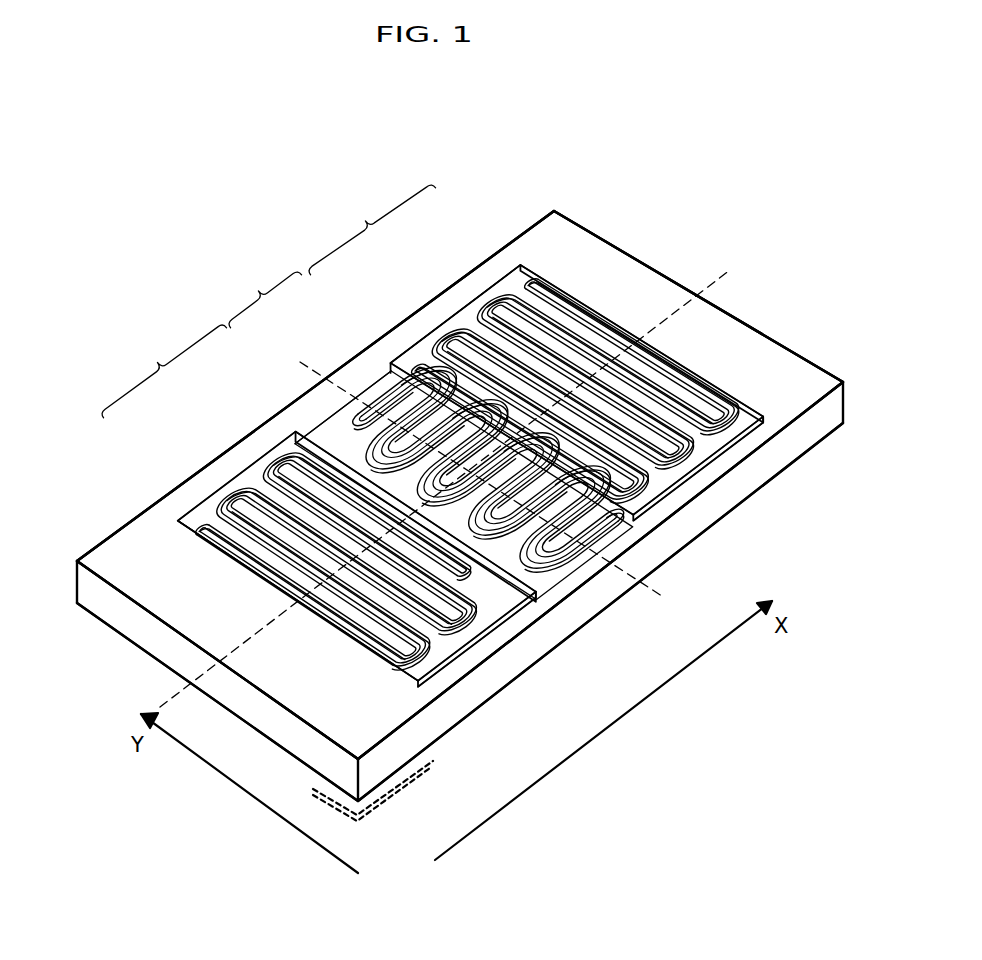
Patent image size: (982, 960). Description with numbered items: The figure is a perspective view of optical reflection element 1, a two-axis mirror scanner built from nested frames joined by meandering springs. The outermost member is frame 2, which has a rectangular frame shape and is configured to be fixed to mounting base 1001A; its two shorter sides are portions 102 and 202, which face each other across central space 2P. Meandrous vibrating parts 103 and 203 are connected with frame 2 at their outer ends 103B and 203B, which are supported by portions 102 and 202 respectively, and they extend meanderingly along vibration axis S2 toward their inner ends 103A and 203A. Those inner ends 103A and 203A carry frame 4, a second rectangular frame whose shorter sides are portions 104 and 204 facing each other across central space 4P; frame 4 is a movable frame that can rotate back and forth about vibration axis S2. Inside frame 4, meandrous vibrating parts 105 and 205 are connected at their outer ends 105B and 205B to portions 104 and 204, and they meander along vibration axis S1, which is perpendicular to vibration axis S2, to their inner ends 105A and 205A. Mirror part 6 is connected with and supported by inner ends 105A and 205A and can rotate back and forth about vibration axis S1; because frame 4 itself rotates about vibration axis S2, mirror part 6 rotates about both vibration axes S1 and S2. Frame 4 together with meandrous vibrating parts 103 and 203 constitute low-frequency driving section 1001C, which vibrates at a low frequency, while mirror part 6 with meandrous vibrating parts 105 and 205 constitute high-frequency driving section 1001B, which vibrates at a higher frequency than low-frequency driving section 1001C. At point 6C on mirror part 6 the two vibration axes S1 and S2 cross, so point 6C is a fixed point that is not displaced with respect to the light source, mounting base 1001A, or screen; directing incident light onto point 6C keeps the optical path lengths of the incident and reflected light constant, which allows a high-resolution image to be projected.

The optical reflection element 1 is at (460, 460).
The frame 2 is at (382, 755).
The central space 2P is at (450, 643).
The frame 4 is at (400, 447).
The central space 4P is at (378, 424).
The mirror part 6 is at (455, 487).
The point 6C is at (470, 483).
The portion 102 is at (160, 597).
The meandrous vibrating part 103 is at (460, 613).
The inner end 103A is at (530, 600).
The outer end 103B is at (200, 522).
The portion 104 is at (560, 548).
The meandrous vibrating part 105 is at (580, 537).
The inner end 105A is at (505, 470).
The outer end 105B is at (577, 600).
The portion 202 is at (725, 343).
The meandrous vibrating part 203 is at (697, 430).
The inner end 203A is at (622, 492).
The outer end 203B is at (523, 280).
The portion 204 is at (333, 420).
The meandrous vibrating part 205 is at (390, 393).
The inner end 205A is at (447, 353).
The outer end 205B is at (353, 423).
The mounting base 1001A is at (357, 819).
The high-frequency driving section 1001B is at (251, 294).
The low-frequency driving section 1001C is at (269, 301).
The vibration axis S1 is at (501, 489).
The vibration axis S2 is at (453, 475).